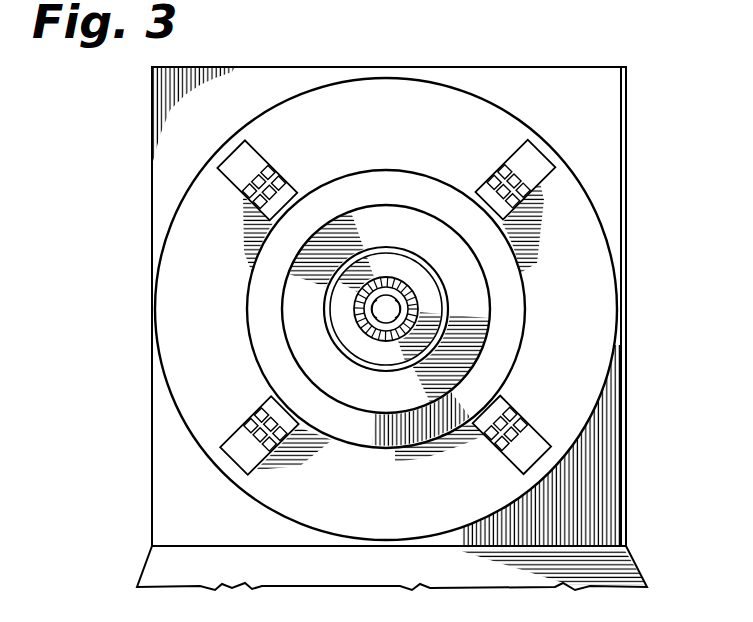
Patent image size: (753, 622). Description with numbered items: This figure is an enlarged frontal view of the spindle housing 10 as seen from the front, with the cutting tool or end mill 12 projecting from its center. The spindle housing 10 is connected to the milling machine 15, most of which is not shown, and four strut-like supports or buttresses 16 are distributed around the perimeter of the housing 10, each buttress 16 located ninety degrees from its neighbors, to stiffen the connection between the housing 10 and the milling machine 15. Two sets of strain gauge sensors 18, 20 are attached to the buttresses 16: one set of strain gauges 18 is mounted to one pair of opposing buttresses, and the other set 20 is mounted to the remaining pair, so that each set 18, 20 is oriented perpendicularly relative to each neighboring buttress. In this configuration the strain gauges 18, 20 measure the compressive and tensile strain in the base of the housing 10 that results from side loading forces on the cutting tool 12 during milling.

The spindle housing 10 is at (521, 255).
The cutting tool 12 is at (398, 297).
The milling machine 15 is at (173, 322).
The buttresses 16 is at (243, 162).
The strain gauge sensors 18 is at (262, 165).
The strain gauge sensors 20 is at (520, 172).